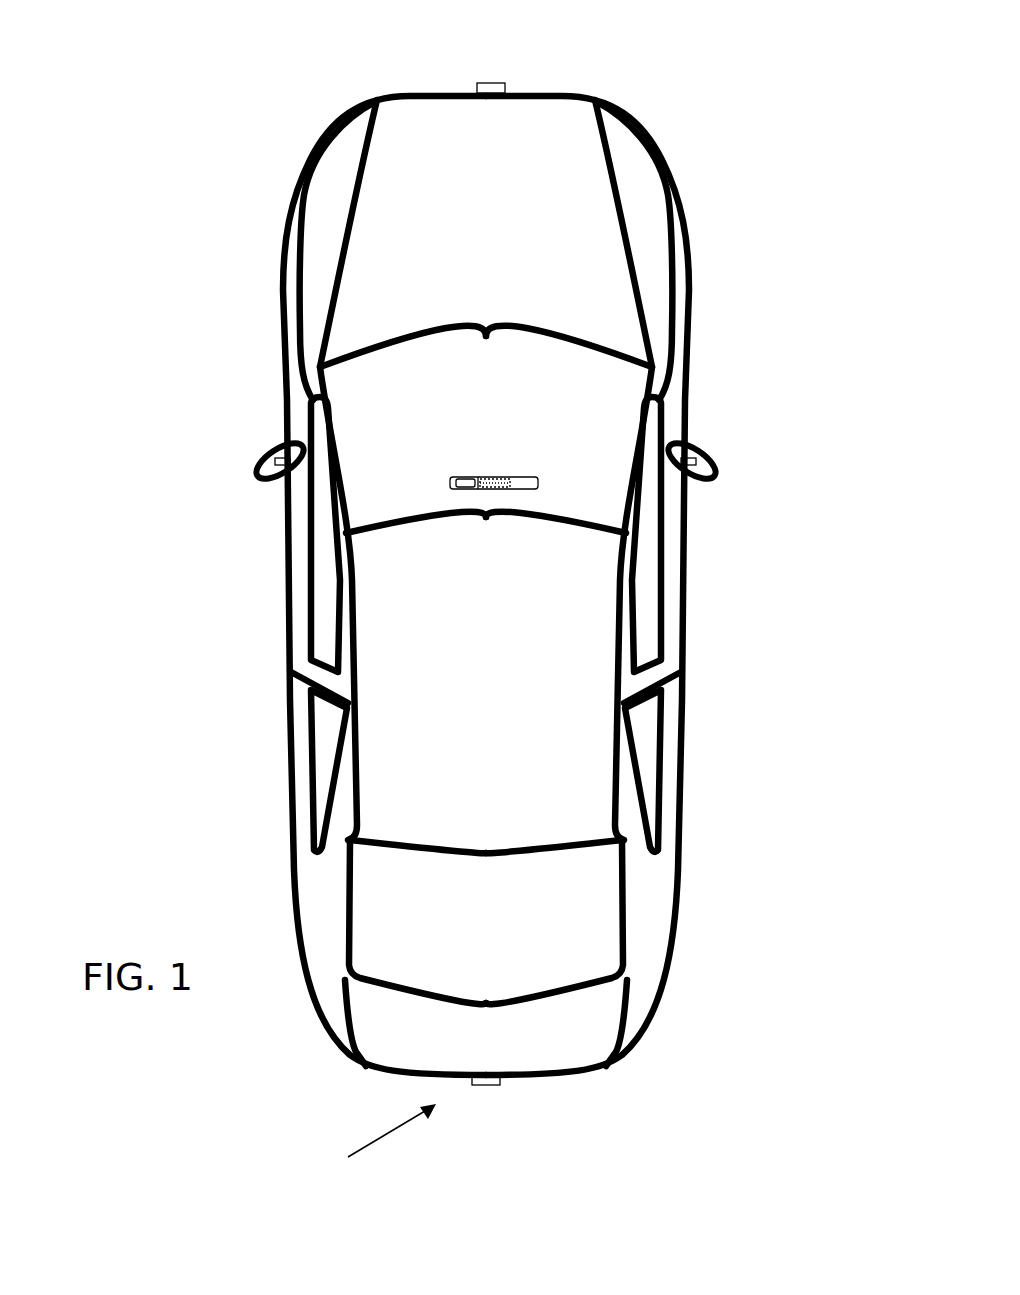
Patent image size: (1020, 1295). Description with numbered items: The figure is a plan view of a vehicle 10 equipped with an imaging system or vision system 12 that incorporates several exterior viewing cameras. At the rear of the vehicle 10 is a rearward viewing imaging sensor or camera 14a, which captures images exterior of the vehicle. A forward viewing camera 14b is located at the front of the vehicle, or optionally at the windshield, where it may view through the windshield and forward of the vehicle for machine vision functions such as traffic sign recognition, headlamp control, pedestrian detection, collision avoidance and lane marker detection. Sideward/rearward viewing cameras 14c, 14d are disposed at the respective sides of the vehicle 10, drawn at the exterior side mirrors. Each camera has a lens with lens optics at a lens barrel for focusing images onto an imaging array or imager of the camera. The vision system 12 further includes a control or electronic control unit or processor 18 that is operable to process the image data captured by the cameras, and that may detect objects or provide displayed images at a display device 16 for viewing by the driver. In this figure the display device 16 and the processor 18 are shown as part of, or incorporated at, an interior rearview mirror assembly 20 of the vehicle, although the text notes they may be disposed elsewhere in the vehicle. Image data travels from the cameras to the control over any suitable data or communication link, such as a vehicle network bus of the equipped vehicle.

The vehicle 10 is at (228, 181).
The vision system 12 is at (374, 1143).
The rearward viewing camera 14a is at (490, 1082).
The forward viewing camera 14b is at (495, 82).
The sideward/rearward viewing camera 14c is at (270, 452).
The sideward/rearward viewing camera 14d is at (702, 452).
The display device 16 is at (470, 477).
The electronic control unit 18 is at (490, 472).
The interior rearview mirror assembly 20 is at (540, 475).